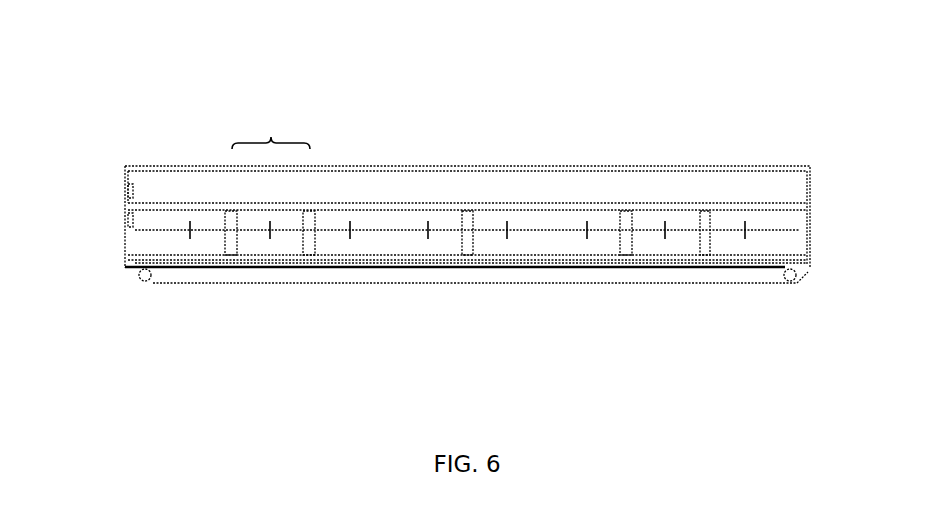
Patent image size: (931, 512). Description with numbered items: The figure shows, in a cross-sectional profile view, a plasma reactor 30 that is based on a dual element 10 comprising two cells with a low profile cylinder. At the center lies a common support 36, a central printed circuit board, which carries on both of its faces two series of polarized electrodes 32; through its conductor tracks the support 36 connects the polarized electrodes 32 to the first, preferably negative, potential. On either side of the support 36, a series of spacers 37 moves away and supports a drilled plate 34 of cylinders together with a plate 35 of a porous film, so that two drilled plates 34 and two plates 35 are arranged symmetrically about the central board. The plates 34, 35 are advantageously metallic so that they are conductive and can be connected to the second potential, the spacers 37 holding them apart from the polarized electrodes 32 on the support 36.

The plasma reactor 30 is at (411, 103).
The dual element 10 is at (271, 121).
The polarized electrodes 32 is at (428, 228).
The drilled plate 34 is at (147, 210).
The plate of a porous film 35 is at (163, 205).
The common support 36 is at (385, 232).
The spacers 37 is at (228, 208).